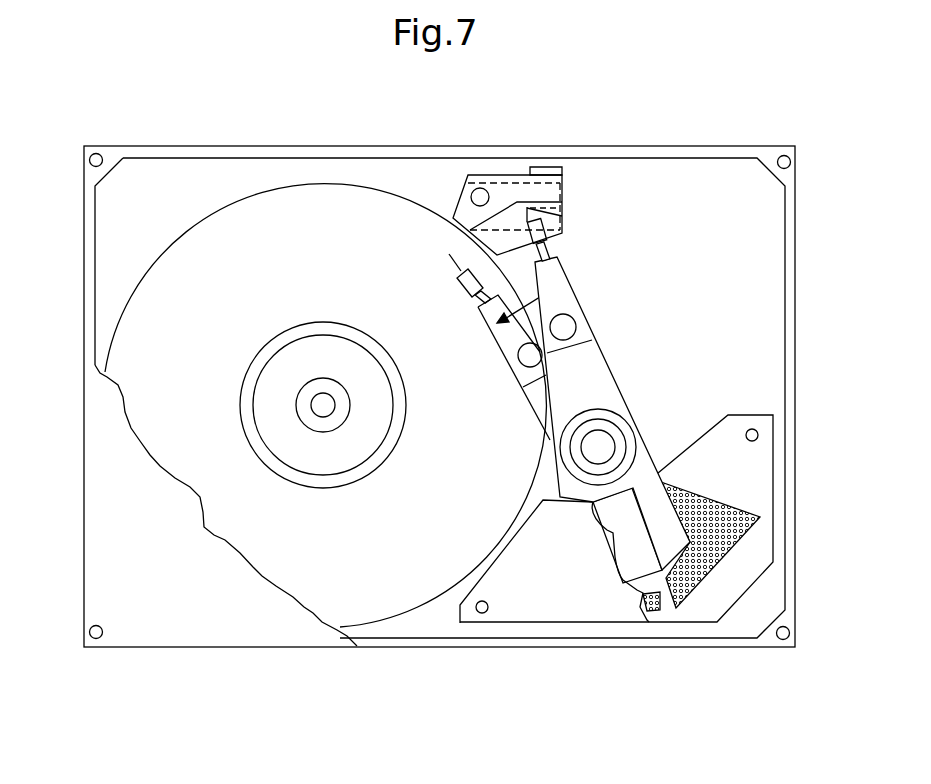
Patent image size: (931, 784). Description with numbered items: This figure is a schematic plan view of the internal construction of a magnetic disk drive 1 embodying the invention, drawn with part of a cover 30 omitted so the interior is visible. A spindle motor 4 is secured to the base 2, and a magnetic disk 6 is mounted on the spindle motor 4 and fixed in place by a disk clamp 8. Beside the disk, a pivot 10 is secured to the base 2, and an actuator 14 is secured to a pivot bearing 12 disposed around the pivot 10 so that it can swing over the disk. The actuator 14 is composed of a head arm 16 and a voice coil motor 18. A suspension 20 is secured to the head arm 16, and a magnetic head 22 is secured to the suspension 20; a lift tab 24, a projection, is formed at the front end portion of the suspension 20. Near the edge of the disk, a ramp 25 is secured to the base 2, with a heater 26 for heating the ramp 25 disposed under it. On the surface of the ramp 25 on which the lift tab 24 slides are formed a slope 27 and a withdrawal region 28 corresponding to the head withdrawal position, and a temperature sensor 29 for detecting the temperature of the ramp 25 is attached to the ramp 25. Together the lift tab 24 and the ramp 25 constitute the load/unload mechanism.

The magnetic disk drive 1 is at (165, 143).
The base 2 is at (422, 622).
The spindle motor 4 is at (315, 392).
The magnetic disk 6 is at (220, 498).
The disk clamp 8 is at (267, 405).
The pivot 10 is at (602, 448).
The pivot bearing 12 is at (605, 412).
The actuator 14 is at (647, 480).
The head arm 16 is at (597, 373).
The voice coil motor 18 is at (623, 552).
The suspension 20 is at (573, 297).
The magnetic head 22 is at (562, 238).
The lift tab 24 is at (562, 193).
The ramp 25 is at (468, 173).
The heater 26 is at (503, 190).
The slope 27 is at (463, 202).
The withdrawal region 28 is at (560, 208).
The temperature sensor 29 is at (546, 166).
The cover 30 is at (212, 623).